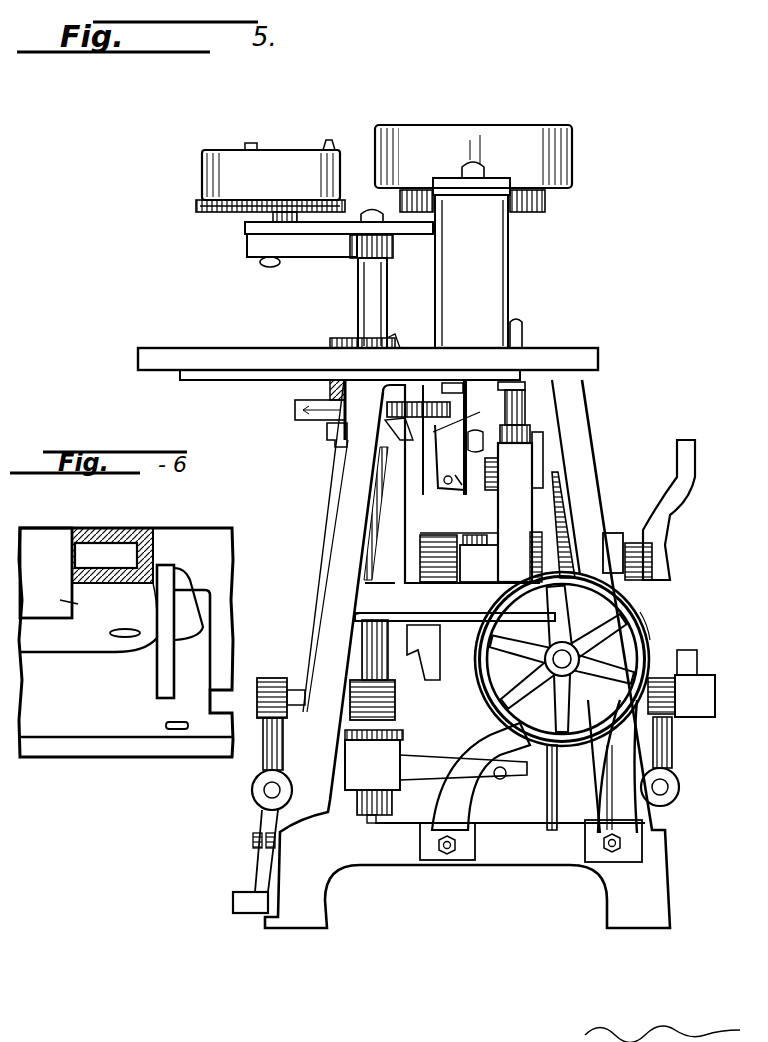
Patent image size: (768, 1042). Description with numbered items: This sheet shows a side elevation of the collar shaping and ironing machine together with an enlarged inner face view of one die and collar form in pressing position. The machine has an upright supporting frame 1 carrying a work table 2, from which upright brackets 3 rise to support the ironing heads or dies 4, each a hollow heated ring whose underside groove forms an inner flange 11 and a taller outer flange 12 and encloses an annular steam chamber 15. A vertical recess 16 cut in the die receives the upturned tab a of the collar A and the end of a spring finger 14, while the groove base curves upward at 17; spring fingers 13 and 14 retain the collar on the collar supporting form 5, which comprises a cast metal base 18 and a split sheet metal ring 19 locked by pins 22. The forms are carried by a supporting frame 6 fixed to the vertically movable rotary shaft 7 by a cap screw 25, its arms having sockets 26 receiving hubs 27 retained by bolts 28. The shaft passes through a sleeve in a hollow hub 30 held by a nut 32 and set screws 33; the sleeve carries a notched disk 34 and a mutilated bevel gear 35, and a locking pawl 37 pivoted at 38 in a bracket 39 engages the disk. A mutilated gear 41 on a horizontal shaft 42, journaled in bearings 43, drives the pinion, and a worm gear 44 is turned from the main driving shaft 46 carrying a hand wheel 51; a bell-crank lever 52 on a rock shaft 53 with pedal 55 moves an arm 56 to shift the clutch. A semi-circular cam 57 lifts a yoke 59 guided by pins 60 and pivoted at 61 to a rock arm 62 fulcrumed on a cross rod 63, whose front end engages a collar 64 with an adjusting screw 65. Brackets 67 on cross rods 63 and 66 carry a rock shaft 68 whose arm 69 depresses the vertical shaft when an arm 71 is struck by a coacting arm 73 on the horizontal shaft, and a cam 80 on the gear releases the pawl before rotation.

In FIG. 5, the upright supporting frame 1 is at (560, 400).
In FIG. 5, the work table 2 is at (252, 360).
In FIG. 5, the upright bracket 3 is at (497, 275).
In FIG. 5, the ironing head or die 4 is at (572, 150).
In FIG. 6, the ironing head or die 4 is at (58, 532).
In FIG. 5, the collar supporting form 5 is at (215, 190).
In FIG. 6, the collar supporting form 5 is at (115, 745).
In FIG. 5, the supporting frame for the forms 6 is at (310, 245).
In FIG. 5, the vertically movable rotary shaft 7 is at (358, 298).
In FIG. 6, the inner flange 11 is at (82, 608).
In FIG. 6, the outer flange 12 is at (232, 650).
In FIG. 5, the spring finger 13 is at (251, 143).
In FIG. 5, the spring finger 14 is at (332, 138).
In FIG. 6, the spring finger 14 is at (157, 680).
In FIG. 6, the annular steam chamber 15 is at (92, 548).
In FIG. 6, the vertical recess 16 is at (192, 548).
In FIG. 6, the upwardly curved end of groove base 17 is at (142, 543).
In FIG. 5, the cast metal base 18 is at (230, 213).
In FIG. 5, the sheet metal ring 19 is at (284, 175).
In FIG. 6, the pin 22 is at (178, 730).
In FIG. 5, the cap screw 25 is at (363, 206).
In FIG. 5, the socket 26 is at (250, 250).
In FIG. 5, the hub 27 is at (284, 213).
In FIG. 5, the bolt 28 is at (268, 268).
In FIG. 5, the hollow hub 30 is at (330, 388).
In FIG. 5, the nut 32 is at (333, 342).
In FIG. 5, the set screw 33 is at (403, 330).
In FIG. 5, the disk 34 is at (295, 410).
In FIG. 5, the mutilated bevel gear 35 is at (330, 440).
In FIG. 5, the locking pawl 37 is at (469, 437).
In FIG. 5, the pivot 38 is at (448, 486).
In FIG. 5, the bracket 39 is at (471, 500).
In FIG. 5, the mutilated gear 41 is at (417, 507).
In FIG. 5, the horizontal shaft 42 is at (637, 543).
In FIG. 5, the bearing 43 is at (480, 578).
In FIG. 5, the worm gear 44 is at (562, 500).
In FIG. 5, the main driving shaft 46 is at (572, 652).
In FIG. 5, the hand wheel 51 is at (632, 622).
In FIG. 5, the bell-crank lever 52 is at (258, 858).
In FIG. 5, the rock shaft 53 is at (253, 840).
In FIG. 5, the pedal 55 is at (245, 913).
In FIG. 5, the upwardly projecting arm 56 is at (558, 795).
In FIG. 5, the semi-circular cam 57 is at (527, 545).
In FIG. 5, the vertically movable yoke 59 is at (513, 478).
In FIG. 5, the guide pin 60 is at (520, 330).
In FIG. 5, the pivotal connection 61 is at (501, 780).
In FIG. 5, the rock arm 62 is at (445, 775).
In FIG. 5, the cross rod 63 is at (668, 787).
In FIG. 5, the collar 64 is at (370, 790).
In FIG. 5, the adjusting screw 65 is at (373, 823).
In FIG. 5, the cross rod 66 is at (264, 790).
In FIG. 5, the bracket 67 is at (672, 745).
In FIG. 5, the rock shaft 68 is at (292, 690).
In FIG. 5, the rock arm 69 is at (362, 695).
In FIG. 5, the rock arm 71 is at (700, 665).
In FIG. 5, the coacting arm 73 is at (676, 498).
In FIG. 5, the cam 80 is at (432, 660).
In FIG. 6, the tab a is at (183, 592).
In FIG. 6, the collar A is at (72, 652).